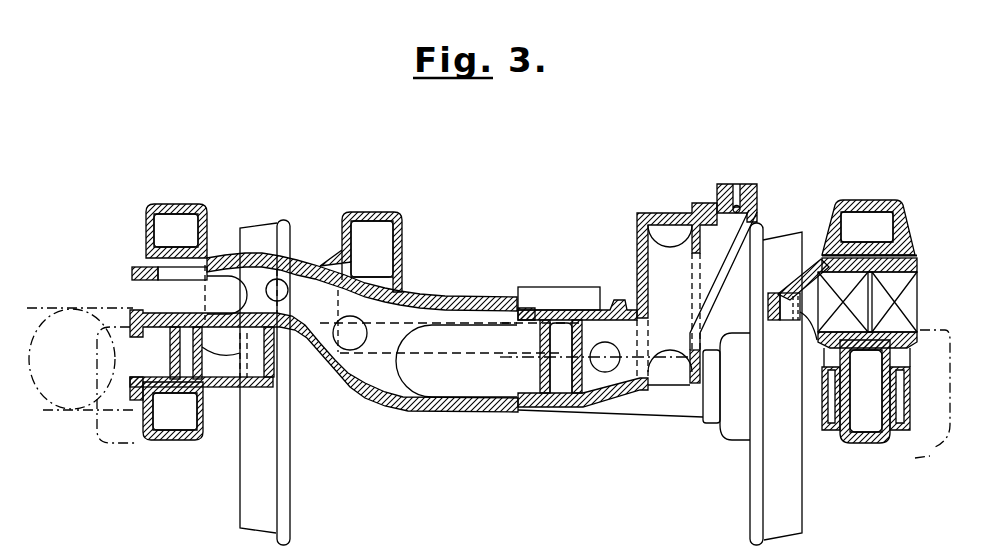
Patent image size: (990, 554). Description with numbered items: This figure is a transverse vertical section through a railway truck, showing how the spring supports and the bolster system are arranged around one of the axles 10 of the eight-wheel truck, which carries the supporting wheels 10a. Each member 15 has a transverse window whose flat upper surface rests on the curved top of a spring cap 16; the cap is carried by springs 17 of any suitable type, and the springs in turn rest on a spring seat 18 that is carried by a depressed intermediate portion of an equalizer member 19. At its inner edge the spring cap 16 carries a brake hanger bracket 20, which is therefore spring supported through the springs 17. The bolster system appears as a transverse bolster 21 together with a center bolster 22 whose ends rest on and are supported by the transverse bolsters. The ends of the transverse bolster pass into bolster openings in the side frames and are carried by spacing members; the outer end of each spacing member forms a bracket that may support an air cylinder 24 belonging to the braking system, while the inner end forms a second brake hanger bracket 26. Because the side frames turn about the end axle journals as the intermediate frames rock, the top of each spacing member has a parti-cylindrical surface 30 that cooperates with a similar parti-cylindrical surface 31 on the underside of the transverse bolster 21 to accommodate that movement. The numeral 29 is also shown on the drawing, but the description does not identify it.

The axle 10 is at (667, 409).
The supporting wheel 10a is at (283, 480).
The member 15 is at (868, 210).
The spring cap 16 is at (915, 260).
The spring 17 is at (907, 298).
The spring seat 18 is at (910, 335).
The equalizer member 19 is at (873, 438).
The brake hanger bracket 20 is at (812, 262).
The transverse bolster 21 is at (370, 397).
The center bolster 22 is at (371, 214).
The air cylinder 24 is at (69, 320).
The brake hanger bracket 26 is at (250, 382).
The tubular boxes 29 is at (143, 393).
The parti-cylindrical surface 30 is at (169, 353).
The parti-cylindrical surface 31 is at (160, 312).